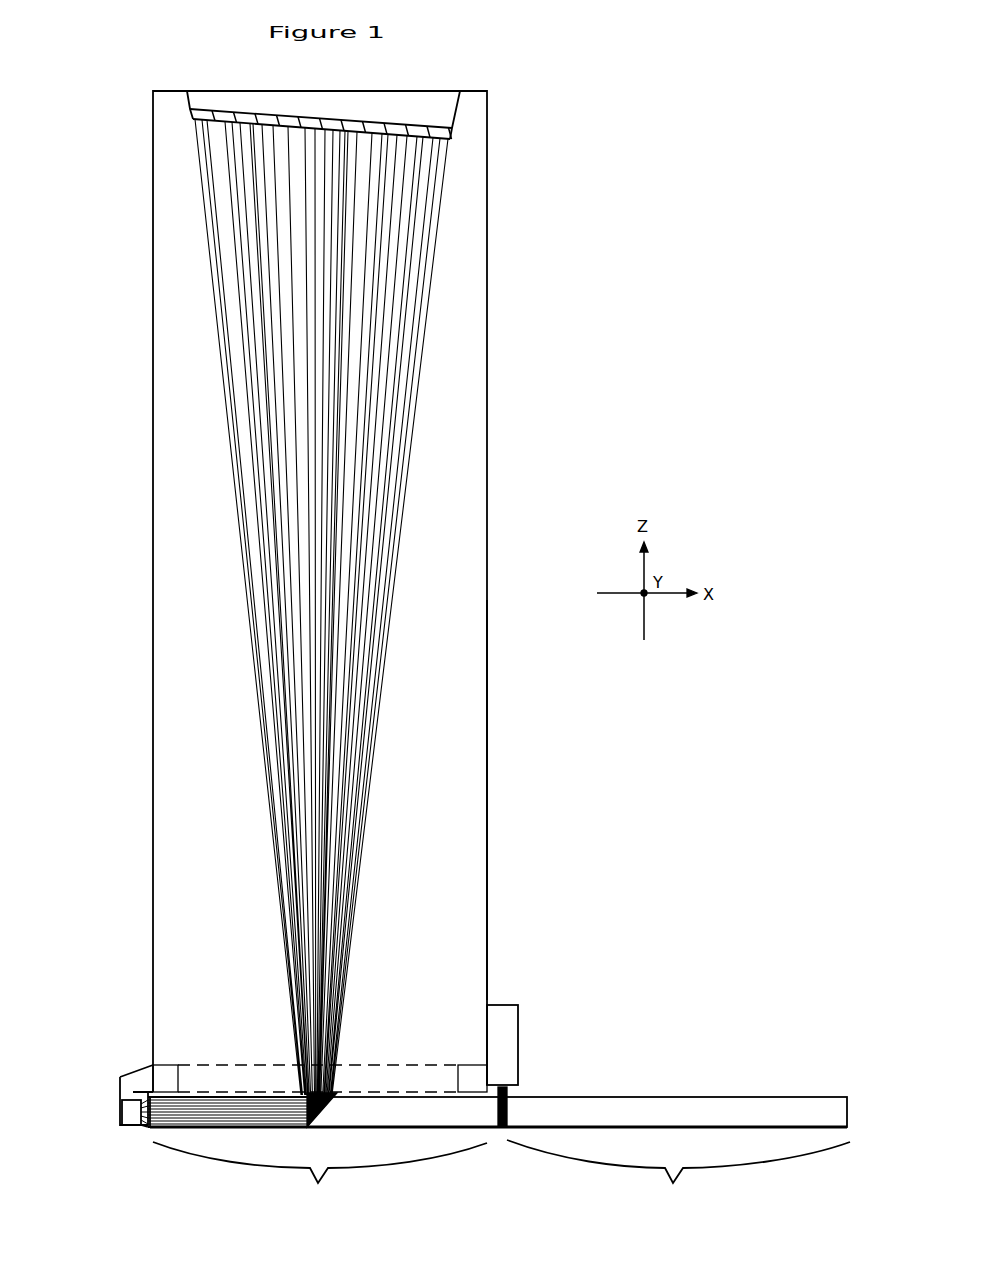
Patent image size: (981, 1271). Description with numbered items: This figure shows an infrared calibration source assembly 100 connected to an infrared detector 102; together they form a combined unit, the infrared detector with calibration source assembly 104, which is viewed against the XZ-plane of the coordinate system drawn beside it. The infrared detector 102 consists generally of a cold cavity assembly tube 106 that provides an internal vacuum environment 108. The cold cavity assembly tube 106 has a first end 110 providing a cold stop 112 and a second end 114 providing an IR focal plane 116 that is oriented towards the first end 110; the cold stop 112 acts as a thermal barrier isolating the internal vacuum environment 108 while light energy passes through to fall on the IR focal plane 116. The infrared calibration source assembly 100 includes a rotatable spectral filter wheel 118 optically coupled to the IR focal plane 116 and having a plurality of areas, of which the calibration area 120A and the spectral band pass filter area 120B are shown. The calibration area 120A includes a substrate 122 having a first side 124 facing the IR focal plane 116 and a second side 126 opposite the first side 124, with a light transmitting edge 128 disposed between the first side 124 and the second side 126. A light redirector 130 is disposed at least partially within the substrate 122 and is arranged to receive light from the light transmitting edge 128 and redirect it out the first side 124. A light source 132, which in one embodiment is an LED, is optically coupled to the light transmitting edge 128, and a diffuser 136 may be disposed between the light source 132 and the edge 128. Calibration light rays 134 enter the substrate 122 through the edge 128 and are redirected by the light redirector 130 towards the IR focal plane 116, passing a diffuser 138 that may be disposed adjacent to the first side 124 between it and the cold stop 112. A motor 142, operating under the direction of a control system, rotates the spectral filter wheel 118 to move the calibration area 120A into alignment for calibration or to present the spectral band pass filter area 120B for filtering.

The infrared calibration source assembly 100 is at (115, 1045).
The infrared detector 102 is at (153, 650).
The infrared detector with calibration source assembly 104 is at (568, 333).
The cold cavity assembly tube 106 is at (488, 731).
The internal vacuum environment 108 is at (458, 368).
The first end 110 is at (455, 1090).
The cold stop 112 is at (427, 1086).
The second end 114 is at (461, 93).
The IR focal plane 116 is at (452, 140).
The rotatable spectral filter wheel 118 is at (500, 1136).
The calibration area 120A is at (320, 1173).
The spectral band pass filter area 120B is at (678, 1170).
The substrate 122 is at (427, 1122).
The first side 124 is at (188, 1096).
The second side 126 is at (221, 1127).
The light transmitting edge 128 is at (142, 1096).
The light redirector 130 is at (202, 1126).
The light source 132 is at (124, 1110).
The calibration light rays 134 is at (363, 835).
The diffuser 136 is at (148, 1127).
The diffuser 138 is at (300, 1091).
The motor 142 is at (500, 1013).